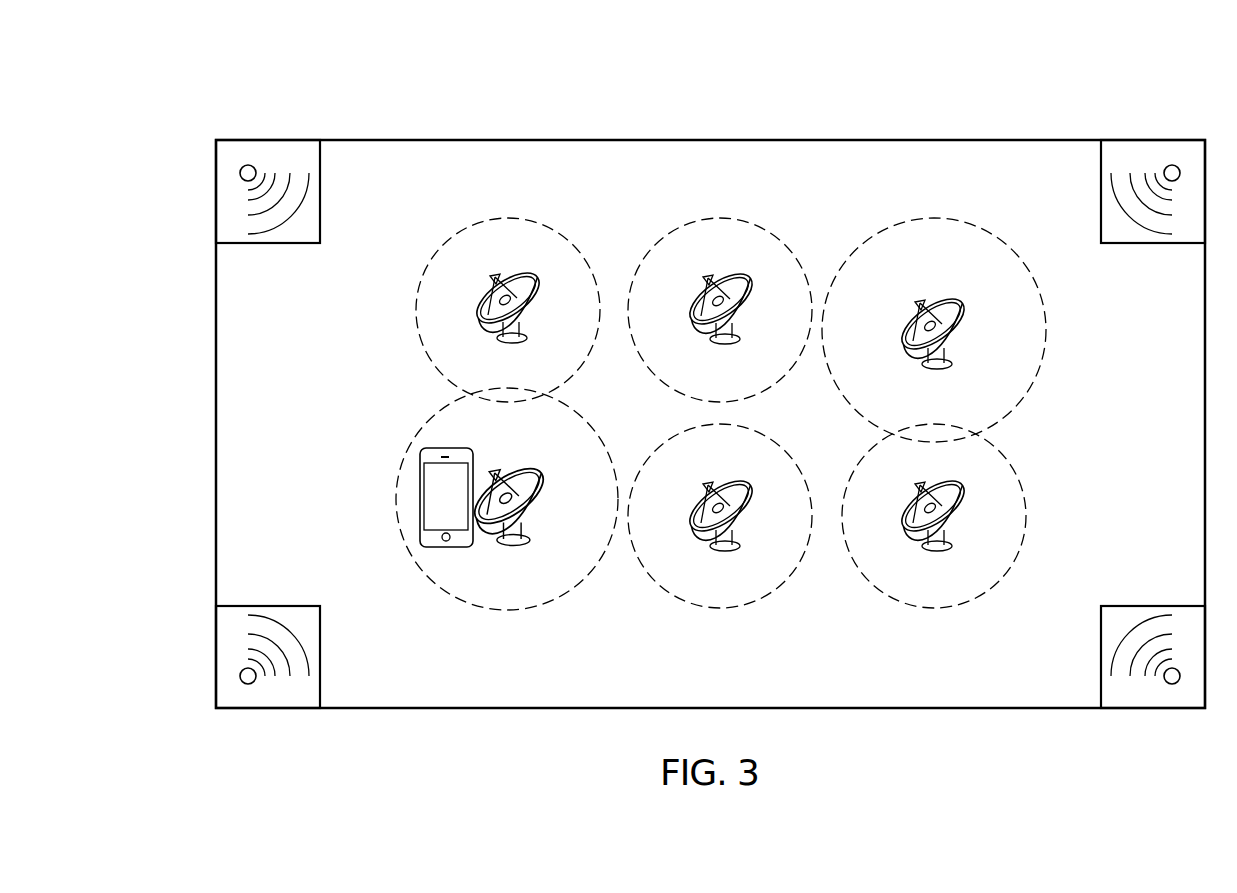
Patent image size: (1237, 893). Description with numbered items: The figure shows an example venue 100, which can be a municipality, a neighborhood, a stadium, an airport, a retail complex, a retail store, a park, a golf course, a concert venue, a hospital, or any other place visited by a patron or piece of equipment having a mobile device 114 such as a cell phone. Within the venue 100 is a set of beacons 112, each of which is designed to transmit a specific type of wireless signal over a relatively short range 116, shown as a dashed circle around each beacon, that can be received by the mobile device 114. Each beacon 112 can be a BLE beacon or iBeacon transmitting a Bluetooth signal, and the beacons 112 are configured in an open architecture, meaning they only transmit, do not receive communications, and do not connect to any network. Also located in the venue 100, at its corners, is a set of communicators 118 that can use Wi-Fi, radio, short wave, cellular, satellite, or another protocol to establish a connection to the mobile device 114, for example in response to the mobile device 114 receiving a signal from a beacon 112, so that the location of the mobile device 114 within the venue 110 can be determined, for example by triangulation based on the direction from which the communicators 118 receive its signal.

The venue 100 is at (240, 118).
The venue 110 is at (500, 140).
The beacon 112 is at (540, 508).
The mobile device 114 is at (473, 463).
The relatively short range 116 is at (396, 498).
The communicator 118 is at (268, 243).